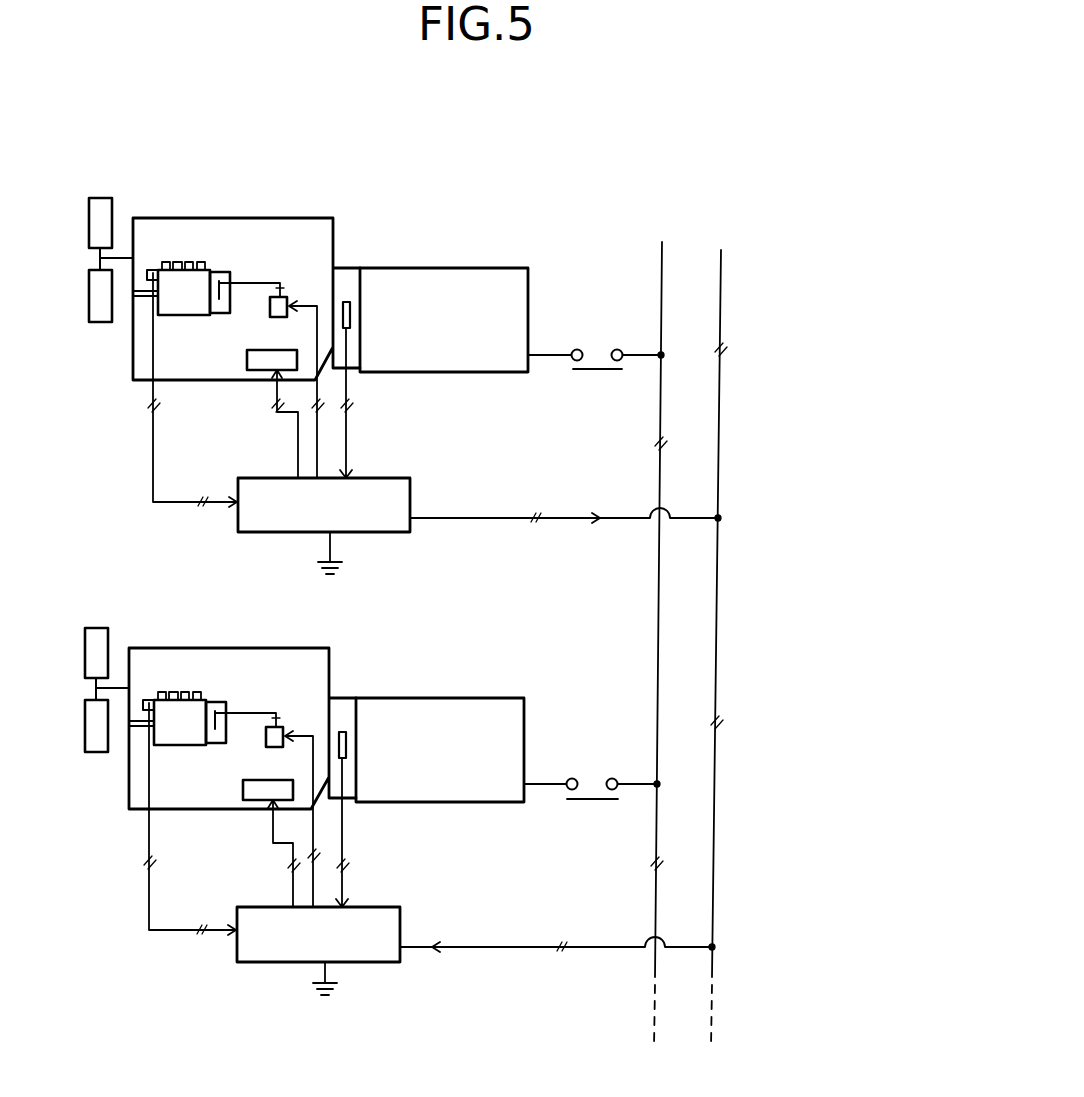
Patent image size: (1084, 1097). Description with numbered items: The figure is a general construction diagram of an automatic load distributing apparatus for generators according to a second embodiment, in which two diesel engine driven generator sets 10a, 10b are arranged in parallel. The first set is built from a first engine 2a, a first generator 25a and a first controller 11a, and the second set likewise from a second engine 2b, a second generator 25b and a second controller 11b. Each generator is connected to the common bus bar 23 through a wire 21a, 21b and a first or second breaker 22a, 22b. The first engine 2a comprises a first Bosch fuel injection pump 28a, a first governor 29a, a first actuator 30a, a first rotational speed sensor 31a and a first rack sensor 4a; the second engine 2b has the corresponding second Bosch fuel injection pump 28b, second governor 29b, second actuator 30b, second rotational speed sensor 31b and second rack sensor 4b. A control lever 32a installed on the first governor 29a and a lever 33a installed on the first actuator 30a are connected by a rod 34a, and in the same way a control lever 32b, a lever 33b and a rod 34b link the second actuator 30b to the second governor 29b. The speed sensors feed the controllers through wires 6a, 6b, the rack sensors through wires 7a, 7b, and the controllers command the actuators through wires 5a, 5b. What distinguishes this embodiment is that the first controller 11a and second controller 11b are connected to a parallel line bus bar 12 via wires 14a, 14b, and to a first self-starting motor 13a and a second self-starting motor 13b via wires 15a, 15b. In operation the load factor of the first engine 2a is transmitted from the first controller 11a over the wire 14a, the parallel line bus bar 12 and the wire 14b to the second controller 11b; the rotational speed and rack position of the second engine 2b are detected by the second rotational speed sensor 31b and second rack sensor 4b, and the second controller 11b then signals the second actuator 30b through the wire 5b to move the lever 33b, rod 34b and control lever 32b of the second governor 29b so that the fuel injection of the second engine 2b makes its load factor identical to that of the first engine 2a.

The first engine 2a is at (240, 217).
The second engine 2b is at (243, 648).
The first rack sensor 4a is at (153, 273).
The second rack sensor 4b is at (149, 704).
The wire 5a is at (317, 333).
The wire 5b is at (313, 832).
The wire 6a is at (346, 413).
The wire 6b is at (342, 832).
The wire 7a is at (153, 465).
The wire 7b is at (149, 895).
The first power generating system 10a is at (99, 358).
The second power generating system 10b is at (99, 788).
The first controller 11a is at (372, 477).
The second controller 11b is at (382, 907).
The bus bar 12 is at (719, 373).
The first self-starting motor 13a is at (257, 370).
The second self-starting motor 13b is at (257, 805).
The wire 14a is at (472, 520).
The wire 14b is at (465, 948).
The wire 15a is at (298, 440).
The wire 15b is at (283, 846).
The wire 21a is at (557, 353).
The wire 21b is at (543, 783).
The first breaker 22a is at (597, 355).
The second breaker 22b is at (595, 793).
The bus bar 23 is at (663, 273).
The first generator 25a is at (456, 268).
The second generator 25b is at (450, 698).
The first Bosch fuel injection pump 28a is at (177, 315).
The second Bosch fuel injection pump 28b is at (173, 745).
The first governor 29a is at (217, 315).
The second governor 29b is at (212, 745).
The first actuator 30a is at (270, 297).
The second actuator 30b is at (266, 727).
The first rotational speed sensor 31a is at (358, 307).
The second rotational speed sensor 31b is at (354, 738).
The control lever 32a is at (228, 300).
The control lever 32b is at (224, 731).
The lever 33a is at (282, 288).
The lever 33b is at (278, 718).
The rod 34a is at (243, 280).
The rod 34b is at (239, 711).